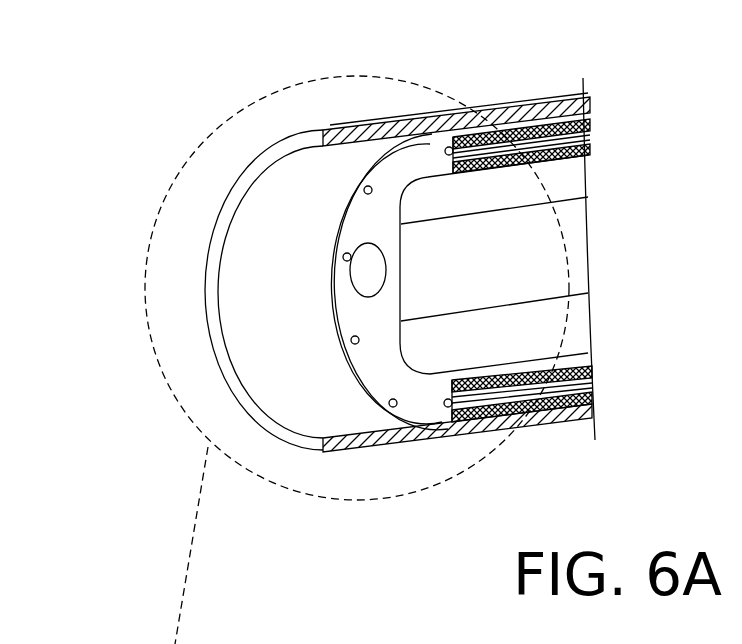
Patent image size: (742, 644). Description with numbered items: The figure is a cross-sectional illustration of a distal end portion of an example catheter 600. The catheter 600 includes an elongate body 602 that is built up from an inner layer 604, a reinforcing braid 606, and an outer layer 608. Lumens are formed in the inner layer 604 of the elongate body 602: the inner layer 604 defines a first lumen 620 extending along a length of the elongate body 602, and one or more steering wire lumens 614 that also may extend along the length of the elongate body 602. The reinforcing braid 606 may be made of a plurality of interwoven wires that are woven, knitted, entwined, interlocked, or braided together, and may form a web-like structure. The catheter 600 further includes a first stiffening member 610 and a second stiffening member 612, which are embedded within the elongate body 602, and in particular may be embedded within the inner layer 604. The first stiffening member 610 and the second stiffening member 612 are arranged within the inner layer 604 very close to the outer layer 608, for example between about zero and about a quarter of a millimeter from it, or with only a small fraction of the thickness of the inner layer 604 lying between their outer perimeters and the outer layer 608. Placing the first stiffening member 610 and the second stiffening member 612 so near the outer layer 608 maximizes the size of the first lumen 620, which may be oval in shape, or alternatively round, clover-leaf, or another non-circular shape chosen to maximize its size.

The catheter 600 is at (162, 105).
The elongate body 602 is at (594, 408).
The inner layer 604 is at (594, 371).
The reinforcing braid 606 is at (484, 426).
The outer layer 608 is at (393, 443).
The first stiffening member 610 is at (481, 150).
The second stiffening member 612 is at (498, 396).
The steering wire lumen 614 is at (365, 255).
The first lumen 620 is at (602, 243).